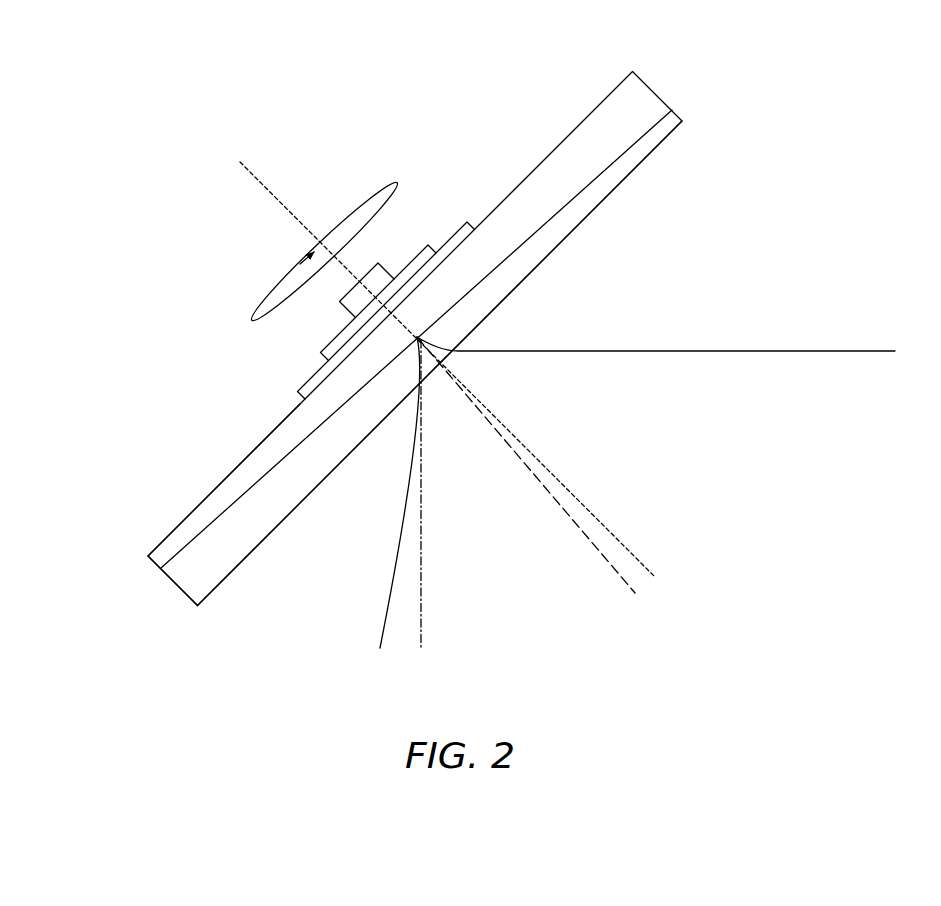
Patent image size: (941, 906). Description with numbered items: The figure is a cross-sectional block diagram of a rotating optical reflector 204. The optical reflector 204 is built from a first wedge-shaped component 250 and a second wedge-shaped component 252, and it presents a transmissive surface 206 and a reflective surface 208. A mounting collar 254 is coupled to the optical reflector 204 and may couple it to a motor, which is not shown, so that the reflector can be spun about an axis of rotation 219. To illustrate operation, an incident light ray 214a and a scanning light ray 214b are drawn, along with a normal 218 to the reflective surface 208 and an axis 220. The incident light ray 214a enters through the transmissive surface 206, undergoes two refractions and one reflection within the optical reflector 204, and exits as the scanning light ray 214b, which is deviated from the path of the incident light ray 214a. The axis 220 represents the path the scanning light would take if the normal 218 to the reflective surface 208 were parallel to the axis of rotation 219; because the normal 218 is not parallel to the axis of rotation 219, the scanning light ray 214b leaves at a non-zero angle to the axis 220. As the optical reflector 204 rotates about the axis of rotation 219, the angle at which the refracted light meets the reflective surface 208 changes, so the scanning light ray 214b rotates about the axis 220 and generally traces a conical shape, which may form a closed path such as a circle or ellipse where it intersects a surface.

The optical reflector 204 is at (660, 86).
The transmissive surface 206 is at (610, 193).
The reflective surface 208 is at (603, 166).
The incident light ray 214a is at (795, 349).
The scanning light ray 214b is at (384, 590).
The normal to the reflective surface 218 is at (526, 469).
The axis of rotation 219 is at (458, 369).
The axis 220 is at (450, 493).
The first wedge-shaped component 250 is at (172, 590).
The second wedge-shaped component 252 is at (157, 538).
The mounting collar 254 is at (318, 352).